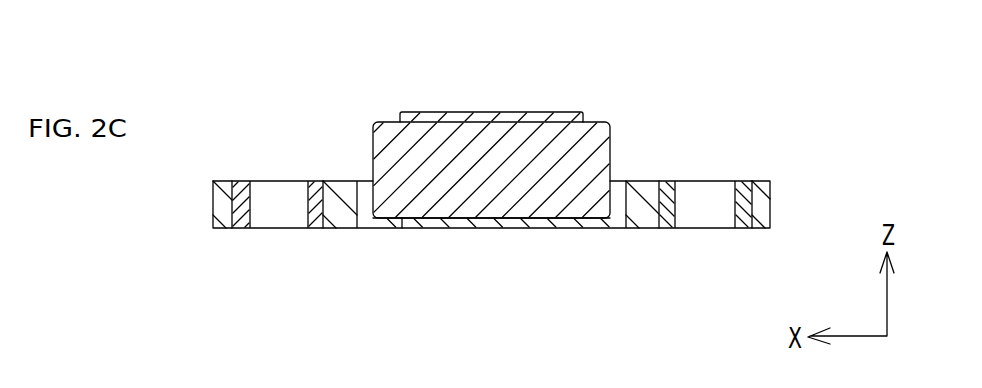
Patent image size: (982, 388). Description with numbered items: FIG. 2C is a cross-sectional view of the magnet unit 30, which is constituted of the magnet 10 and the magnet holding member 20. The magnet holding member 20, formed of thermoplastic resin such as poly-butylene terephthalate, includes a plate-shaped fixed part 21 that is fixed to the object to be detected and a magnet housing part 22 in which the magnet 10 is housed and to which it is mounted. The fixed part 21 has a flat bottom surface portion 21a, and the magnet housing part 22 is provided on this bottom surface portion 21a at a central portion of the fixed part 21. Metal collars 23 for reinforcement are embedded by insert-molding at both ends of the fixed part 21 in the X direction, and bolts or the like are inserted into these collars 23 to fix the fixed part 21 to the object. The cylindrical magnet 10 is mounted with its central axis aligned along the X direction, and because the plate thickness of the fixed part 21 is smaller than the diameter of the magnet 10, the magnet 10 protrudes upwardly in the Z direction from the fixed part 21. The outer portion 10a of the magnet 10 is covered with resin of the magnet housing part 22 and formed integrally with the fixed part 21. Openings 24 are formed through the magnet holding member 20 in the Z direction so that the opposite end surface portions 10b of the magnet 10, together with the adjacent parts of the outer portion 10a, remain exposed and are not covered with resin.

The magnet 10 is at (481, 172).
The outer portion 10a is at (483, 213).
The end surface portion 10b is at (374, 204).
The magnet holding member 20 is at (481, 172).
The fixed part 21 is at (491, 203).
The bottom surface portion 21a is at (547, 229).
The magnet housing part 22 is at (491, 120).
The collar 23 is at (241, 181).
The opening 24 is at (363, 181).
The magnet unit 30 is at (491, 160).